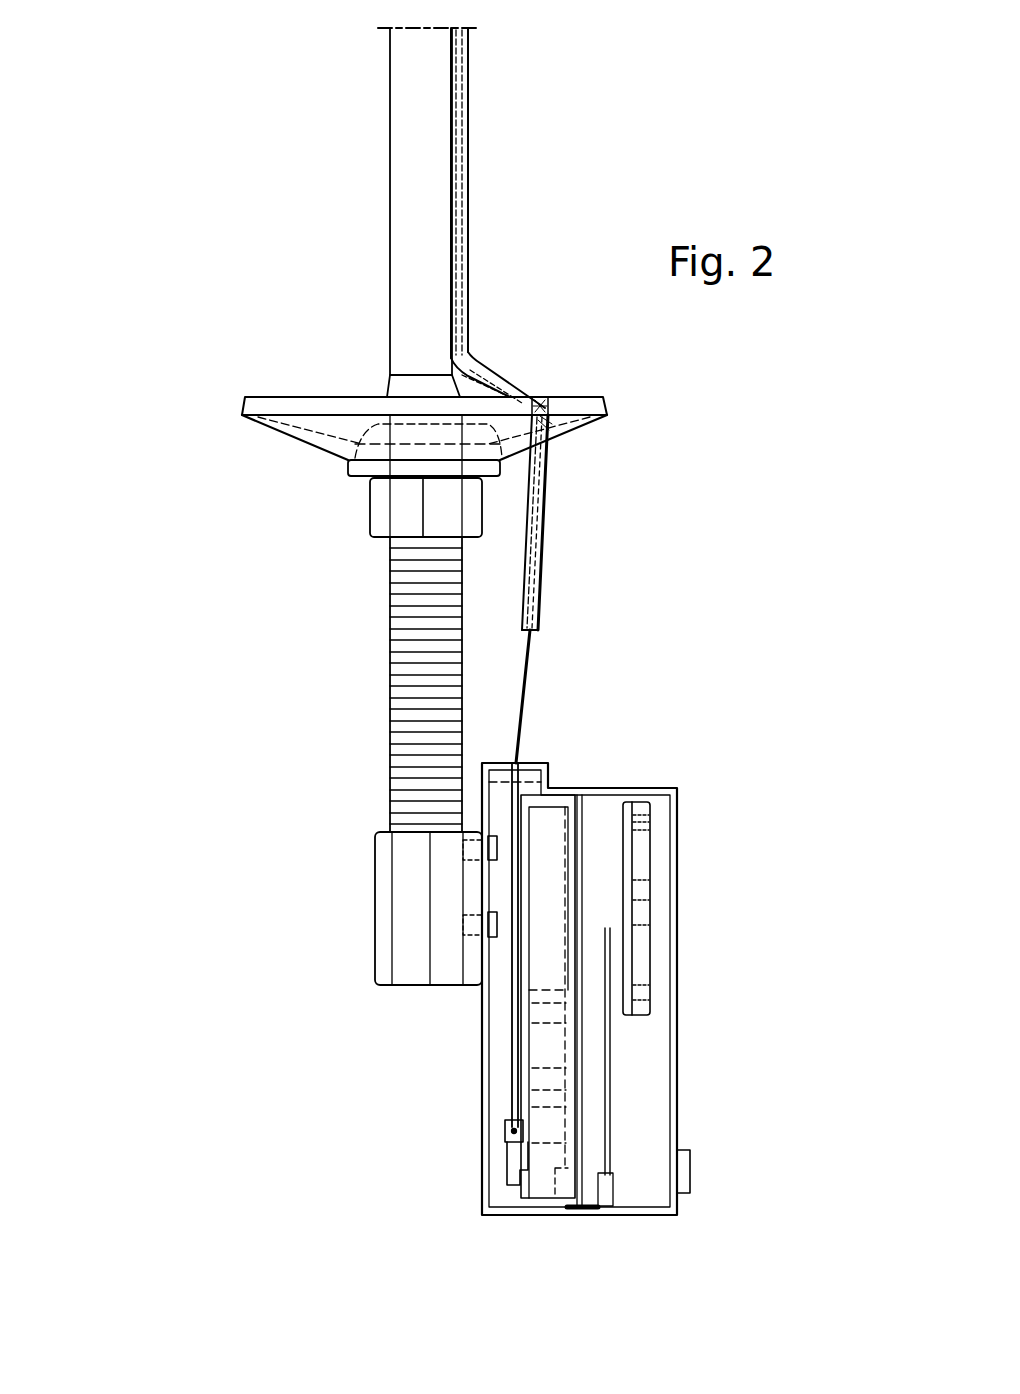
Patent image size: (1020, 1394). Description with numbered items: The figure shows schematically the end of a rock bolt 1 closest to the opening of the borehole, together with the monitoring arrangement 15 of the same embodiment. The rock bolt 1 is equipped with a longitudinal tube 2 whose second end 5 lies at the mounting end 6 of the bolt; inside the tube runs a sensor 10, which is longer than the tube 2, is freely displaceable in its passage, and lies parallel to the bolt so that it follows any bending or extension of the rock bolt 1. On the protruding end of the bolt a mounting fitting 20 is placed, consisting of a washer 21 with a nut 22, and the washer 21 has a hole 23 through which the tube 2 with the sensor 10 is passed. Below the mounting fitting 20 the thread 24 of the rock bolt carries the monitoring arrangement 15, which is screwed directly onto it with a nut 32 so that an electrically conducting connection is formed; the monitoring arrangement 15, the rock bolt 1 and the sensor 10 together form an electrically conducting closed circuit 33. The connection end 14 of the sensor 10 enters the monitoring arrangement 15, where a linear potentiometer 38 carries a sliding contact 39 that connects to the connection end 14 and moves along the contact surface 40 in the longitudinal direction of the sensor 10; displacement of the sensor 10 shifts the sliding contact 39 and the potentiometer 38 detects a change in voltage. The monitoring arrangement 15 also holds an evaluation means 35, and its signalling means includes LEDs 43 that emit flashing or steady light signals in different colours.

The rock bolt 1 is at (410, 232).
The longitudinal tube 2 is at (472, 172).
The second end 5 is at (558, 528).
The mounting end 6 is at (330, 684).
The sensor 10 is at (530, 667).
The connection end 14 is at (512, 1012).
The monitoring arrangement 15 is at (603, 808).
The mounting fitting 20 is at (359, 409).
The washer 21 is at (290, 428).
The nut 22 is at (378, 510).
The hole 23 is at (548, 425).
The thread 24 is at (407, 753).
The nut 32 is at (383, 907).
The electrically conducting closed circuit 33 is at (467, 1010).
The evaluation means 35 is at (640, 838).
The linear potentiometer 38 is at (550, 1045).
The sliding contact 39 is at (517, 1157).
The contact surface 40 is at (565, 1082).
The LEDs 43 is at (687, 1137).